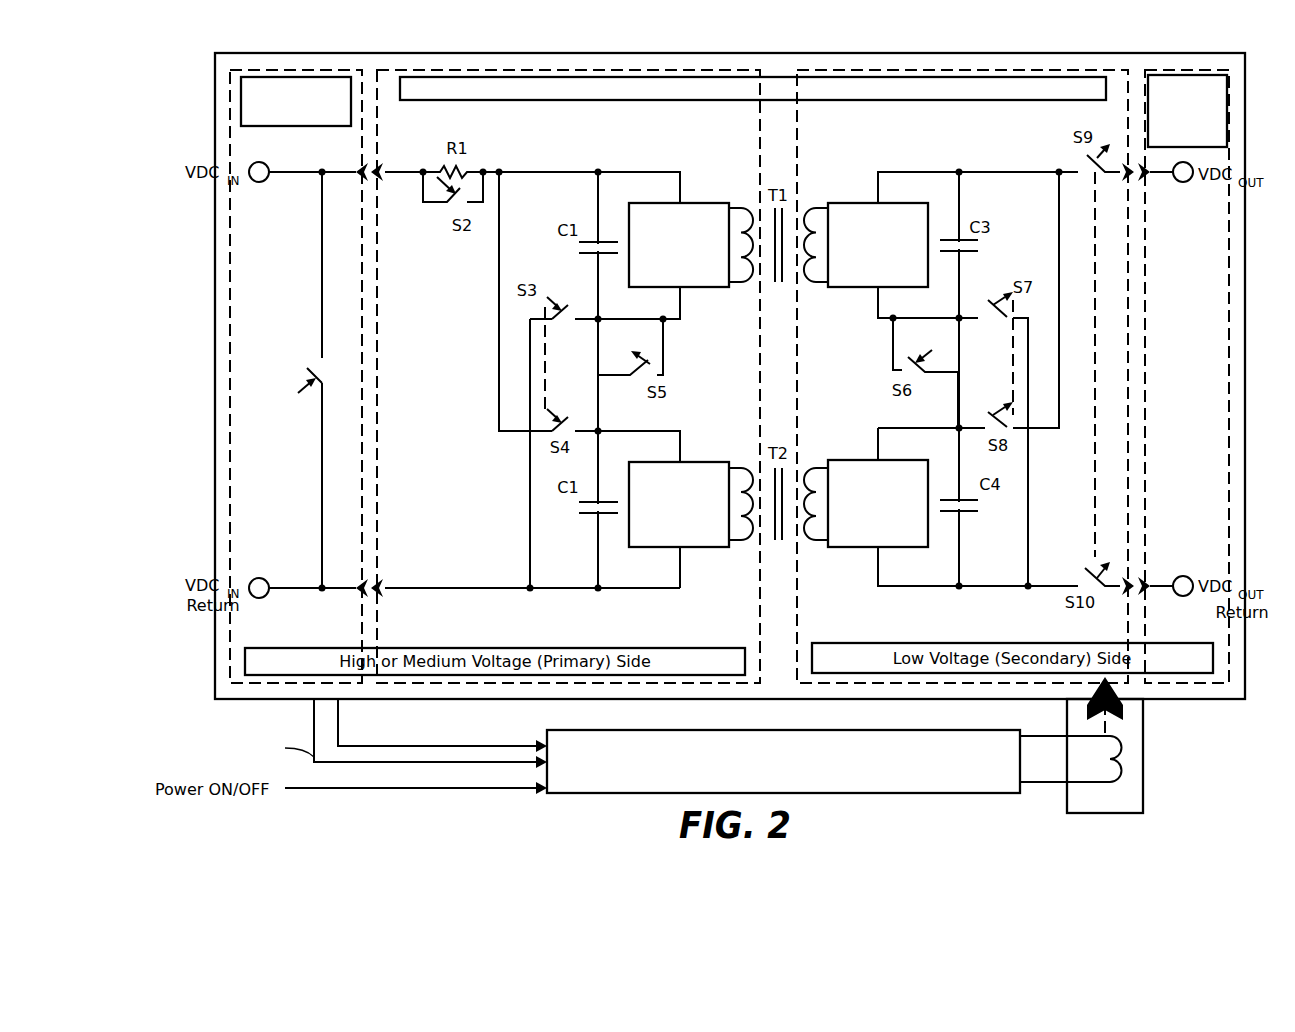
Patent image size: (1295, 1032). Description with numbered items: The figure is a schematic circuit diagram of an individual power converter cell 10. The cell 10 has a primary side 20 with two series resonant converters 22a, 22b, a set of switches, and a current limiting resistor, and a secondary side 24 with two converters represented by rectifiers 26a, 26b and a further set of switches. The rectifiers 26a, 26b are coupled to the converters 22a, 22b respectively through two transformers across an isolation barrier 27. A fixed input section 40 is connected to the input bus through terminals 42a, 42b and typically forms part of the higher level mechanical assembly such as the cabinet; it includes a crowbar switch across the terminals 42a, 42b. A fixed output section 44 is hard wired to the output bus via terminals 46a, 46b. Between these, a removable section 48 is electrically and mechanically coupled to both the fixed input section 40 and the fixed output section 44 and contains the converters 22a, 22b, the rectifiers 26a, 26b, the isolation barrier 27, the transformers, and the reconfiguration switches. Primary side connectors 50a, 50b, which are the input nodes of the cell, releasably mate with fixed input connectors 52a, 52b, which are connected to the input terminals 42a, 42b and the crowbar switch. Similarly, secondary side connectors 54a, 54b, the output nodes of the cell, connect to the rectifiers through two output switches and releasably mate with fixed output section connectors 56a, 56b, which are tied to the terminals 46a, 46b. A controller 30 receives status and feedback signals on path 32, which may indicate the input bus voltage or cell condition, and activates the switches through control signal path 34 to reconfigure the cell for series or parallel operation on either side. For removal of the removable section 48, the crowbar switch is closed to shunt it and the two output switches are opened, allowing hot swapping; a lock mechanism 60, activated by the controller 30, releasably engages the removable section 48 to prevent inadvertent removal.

The cell 10 is at (238, 47).
The primary side 20 is at (511, 125).
The secondary side 24 is at (945, 123).
The removable section 48 is at (640, 125).
The isolation barrier 27 is at (772, 150).
The series resonant converter 22a is at (665, 272).
The series resonant converter 22b is at (665, 531).
The rectifier 26a is at (864, 277).
The rectifier 26b is at (864, 537).
The controller 30 is at (813, 771).
The status and feedback signal path 32 is at (512, 745).
The control signal path 34 is at (393, 763).
The fixed input section 40 is at (246, 378).
The input terminal 42a is at (265, 183).
The input terminal 42b is at (264, 578).
The fixed output section 44 is at (1174, 343).
The output terminal 46a is at (1192, 181).
The output terminal 46b is at (1184, 597).
The primary side connector 50a is at (381, 180).
The primary side connector 50b is at (380, 584).
The fixed input connector 52a is at (358, 166).
The fixed input connector 52b is at (358, 596).
The secondary side connector 54a is at (1126, 165).
The secondary side connector 54b is at (1123, 593).
The fixed output section connector 56a is at (1147, 175).
The fixed output section connector 56b is at (1145, 580).
The lock mechanism 60 is at (1121, 706).